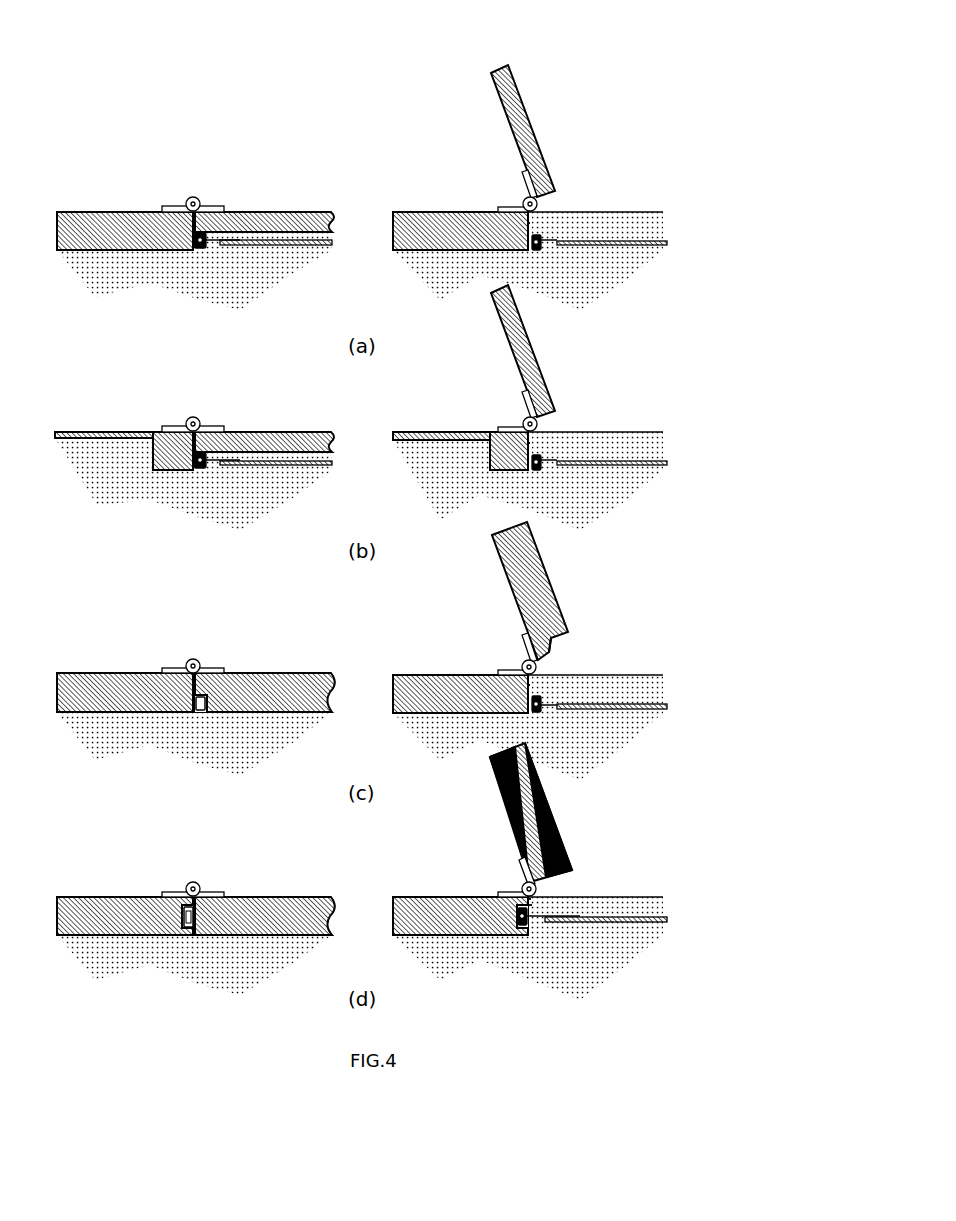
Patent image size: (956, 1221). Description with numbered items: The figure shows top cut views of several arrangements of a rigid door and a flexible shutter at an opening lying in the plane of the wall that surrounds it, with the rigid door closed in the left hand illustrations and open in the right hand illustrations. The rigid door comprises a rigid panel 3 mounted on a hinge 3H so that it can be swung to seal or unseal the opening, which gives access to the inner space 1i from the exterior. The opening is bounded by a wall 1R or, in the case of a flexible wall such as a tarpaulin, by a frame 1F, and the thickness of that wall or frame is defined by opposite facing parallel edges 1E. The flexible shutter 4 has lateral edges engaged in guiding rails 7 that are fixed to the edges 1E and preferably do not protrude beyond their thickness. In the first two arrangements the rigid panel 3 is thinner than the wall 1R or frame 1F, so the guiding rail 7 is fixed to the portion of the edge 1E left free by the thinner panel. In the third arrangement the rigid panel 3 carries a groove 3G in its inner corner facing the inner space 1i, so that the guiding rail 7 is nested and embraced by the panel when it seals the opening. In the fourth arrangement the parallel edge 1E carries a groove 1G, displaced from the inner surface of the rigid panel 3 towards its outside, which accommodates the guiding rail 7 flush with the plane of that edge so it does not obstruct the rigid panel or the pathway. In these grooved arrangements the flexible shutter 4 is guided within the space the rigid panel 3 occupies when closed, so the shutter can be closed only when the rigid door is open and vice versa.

The rigid panel 3 is at (332, 220).
The hinge 3H is at (200, 201).
The groove of the rigid panel 3G is at (555, 644).
The wall 1R is at (140, 250).
The frame 1F is at (165, 470).
The edge of the opening 1E is at (528, 223).
The groove of the parallel edge 1G is at (528, 905).
The inner space 1i is at (273, 281).
The flexible shutter 4 is at (332, 243).
The guiding rail 7 is at (200, 250).